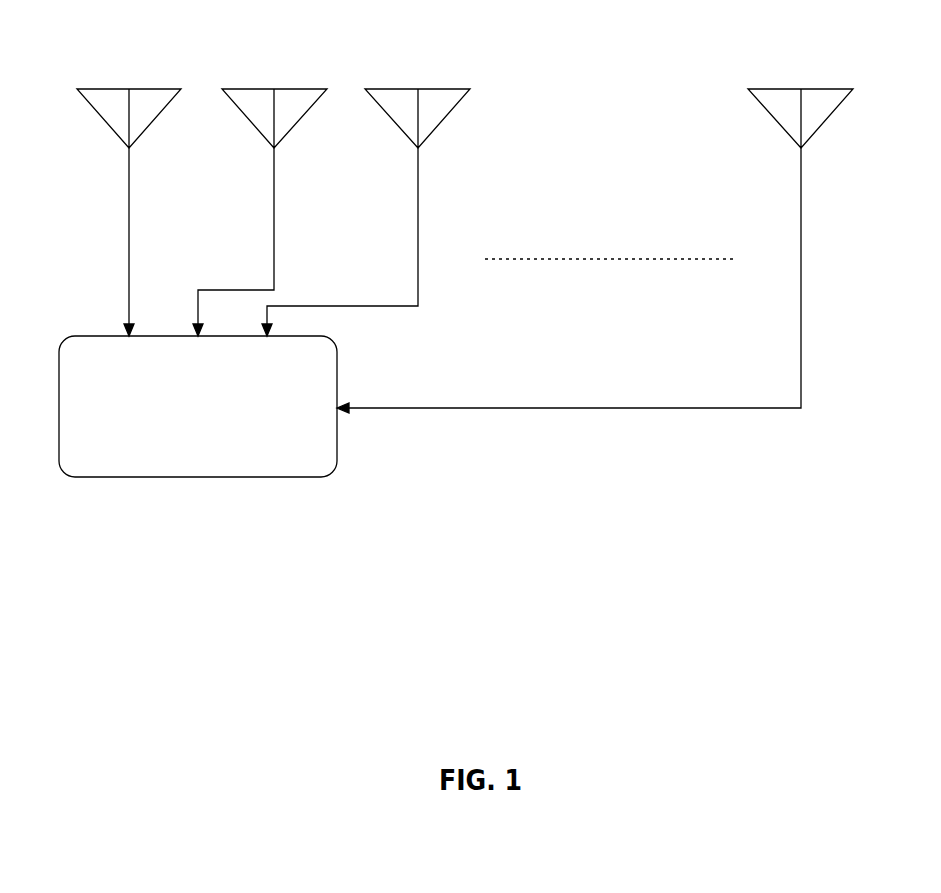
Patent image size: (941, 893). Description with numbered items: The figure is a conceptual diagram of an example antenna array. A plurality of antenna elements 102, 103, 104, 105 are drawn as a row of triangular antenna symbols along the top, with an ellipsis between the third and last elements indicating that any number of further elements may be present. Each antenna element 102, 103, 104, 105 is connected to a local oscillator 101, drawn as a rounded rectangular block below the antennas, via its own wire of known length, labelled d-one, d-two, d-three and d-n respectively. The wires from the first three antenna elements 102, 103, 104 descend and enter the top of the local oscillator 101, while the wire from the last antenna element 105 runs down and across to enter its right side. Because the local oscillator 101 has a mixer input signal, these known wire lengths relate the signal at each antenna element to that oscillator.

The local oscillator 101 is at (198, 406).
The antenna element 102 is at (150, 89).
The antenna element 103 is at (298, 89).
The antenna element 104 is at (447, 89).
The antenna element 105 is at (830, 89).